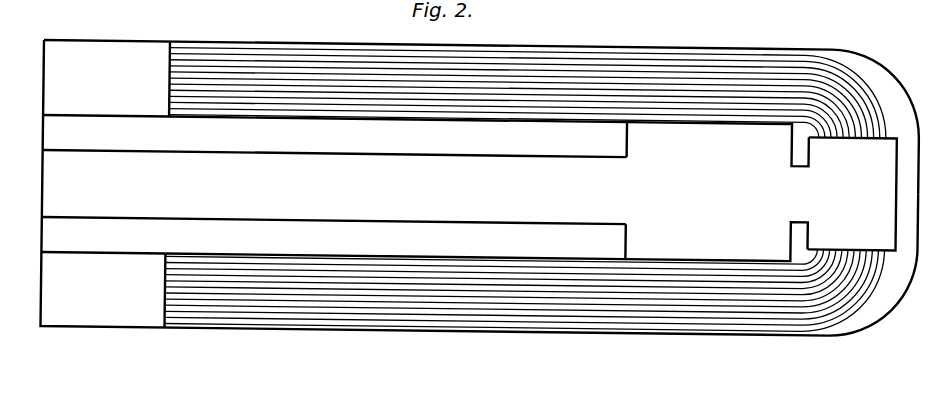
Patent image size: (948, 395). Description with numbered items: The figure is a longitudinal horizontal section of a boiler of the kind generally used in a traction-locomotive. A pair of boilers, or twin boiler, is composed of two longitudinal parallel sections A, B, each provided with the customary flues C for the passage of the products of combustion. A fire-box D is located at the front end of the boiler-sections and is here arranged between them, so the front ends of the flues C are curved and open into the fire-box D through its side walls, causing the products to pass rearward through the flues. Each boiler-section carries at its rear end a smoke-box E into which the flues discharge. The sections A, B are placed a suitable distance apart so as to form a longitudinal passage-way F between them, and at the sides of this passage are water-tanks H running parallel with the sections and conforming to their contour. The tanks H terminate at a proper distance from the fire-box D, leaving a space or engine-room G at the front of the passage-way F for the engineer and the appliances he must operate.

The boiler section A is at (481, 106).
The boiler section B is at (479, 272).
The flues C is at (526, 190).
The fire-box D is at (851, 193).
The smoke-box E is at (105, 184).
The passage-way F is at (334, 187).
The engine-room G is at (717, 191).
The water-tanks H is at (396, 188).